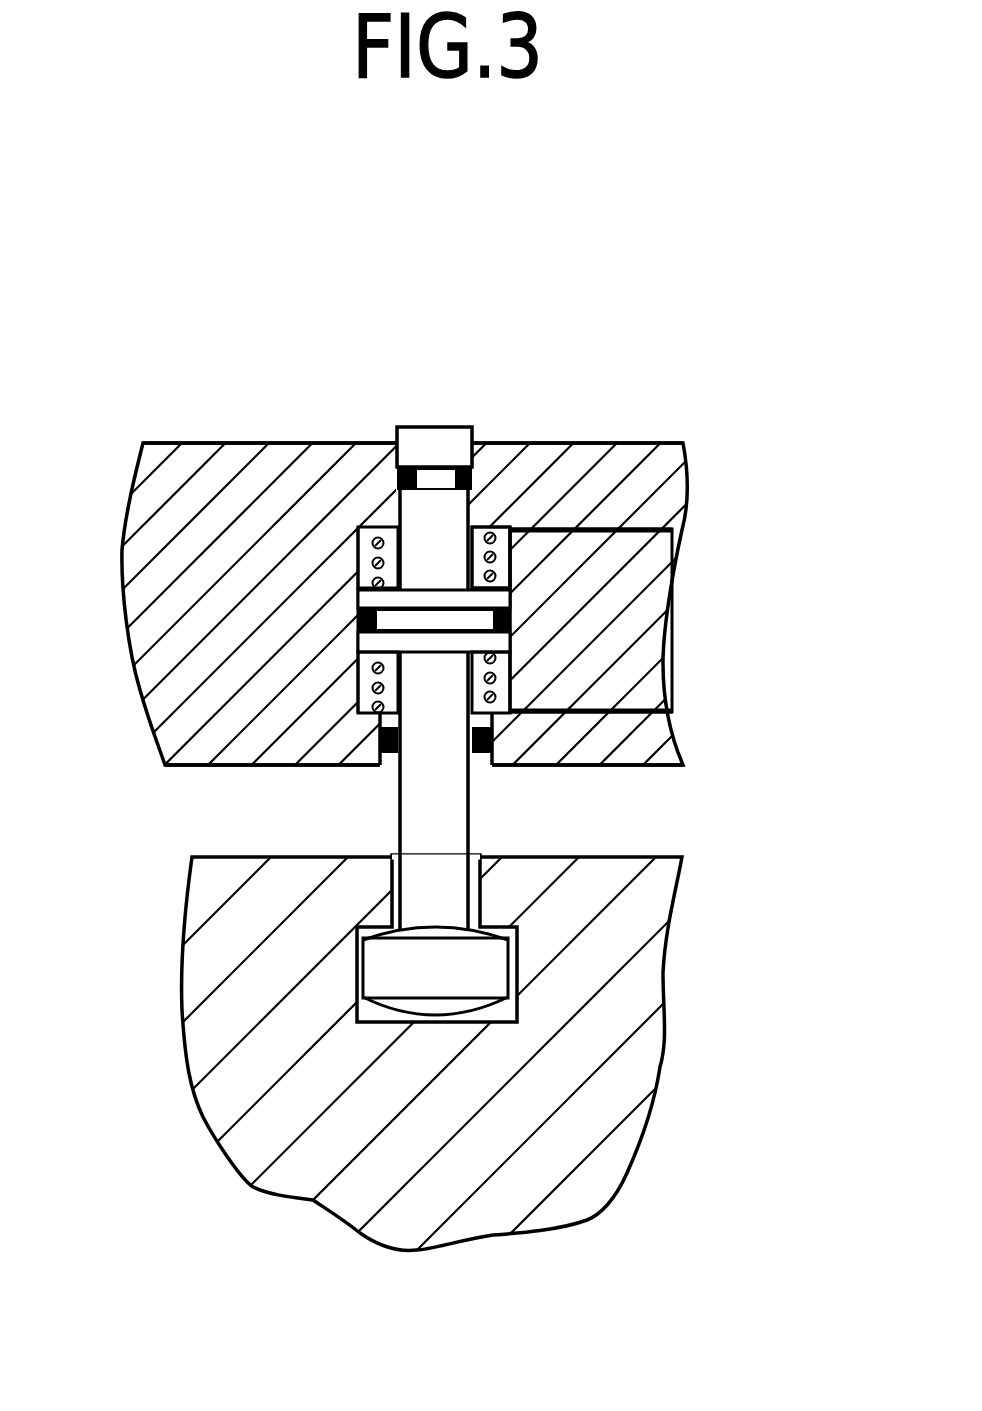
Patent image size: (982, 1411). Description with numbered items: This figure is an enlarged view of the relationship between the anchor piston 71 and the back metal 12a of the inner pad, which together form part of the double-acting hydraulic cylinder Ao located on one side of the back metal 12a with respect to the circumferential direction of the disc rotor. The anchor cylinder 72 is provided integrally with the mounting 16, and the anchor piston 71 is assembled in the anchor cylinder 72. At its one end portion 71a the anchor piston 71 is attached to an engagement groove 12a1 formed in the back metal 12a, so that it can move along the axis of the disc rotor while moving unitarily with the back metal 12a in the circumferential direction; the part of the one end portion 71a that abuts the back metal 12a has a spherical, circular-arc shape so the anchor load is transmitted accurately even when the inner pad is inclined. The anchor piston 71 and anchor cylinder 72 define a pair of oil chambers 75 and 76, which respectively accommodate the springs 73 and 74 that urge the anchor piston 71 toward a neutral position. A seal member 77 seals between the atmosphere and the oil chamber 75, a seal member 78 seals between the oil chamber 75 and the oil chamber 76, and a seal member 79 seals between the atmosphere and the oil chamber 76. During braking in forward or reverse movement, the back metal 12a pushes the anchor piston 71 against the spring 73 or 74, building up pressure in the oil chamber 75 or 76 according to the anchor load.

The mounting 16 is at (160, 443).
The anchor cylinder 72 is at (330, 590).
The double-acting hydraulic cylinder Ao is at (360, 513).
The seal member 77 is at (460, 467).
The spring 73 is at (487, 537).
The oil chamber 75 is at (503, 567).
The seal member 78 is at (512, 618).
The spring 74 is at (492, 677).
The oil chamber 76 is at (505, 712).
The seal member 79 is at (485, 727).
The anchor piston 71 is at (427, 813).
The one end portion 71a is at (385, 966).
The back metal 12a is at (483, 1207).
The engagement groove 12a1 is at (497, 977).